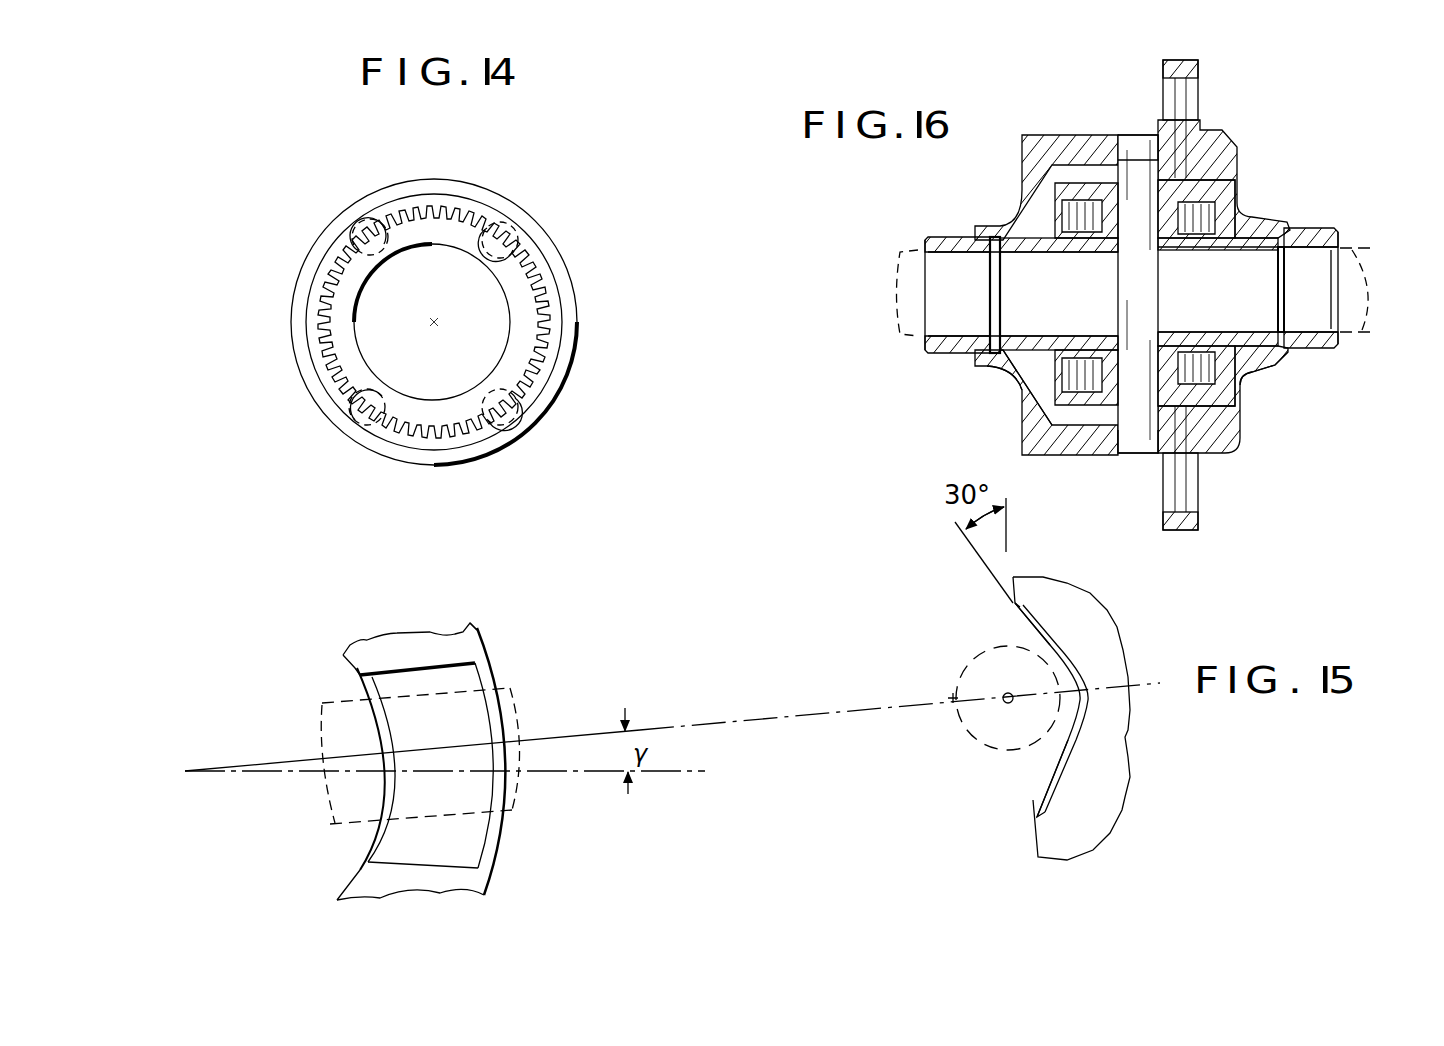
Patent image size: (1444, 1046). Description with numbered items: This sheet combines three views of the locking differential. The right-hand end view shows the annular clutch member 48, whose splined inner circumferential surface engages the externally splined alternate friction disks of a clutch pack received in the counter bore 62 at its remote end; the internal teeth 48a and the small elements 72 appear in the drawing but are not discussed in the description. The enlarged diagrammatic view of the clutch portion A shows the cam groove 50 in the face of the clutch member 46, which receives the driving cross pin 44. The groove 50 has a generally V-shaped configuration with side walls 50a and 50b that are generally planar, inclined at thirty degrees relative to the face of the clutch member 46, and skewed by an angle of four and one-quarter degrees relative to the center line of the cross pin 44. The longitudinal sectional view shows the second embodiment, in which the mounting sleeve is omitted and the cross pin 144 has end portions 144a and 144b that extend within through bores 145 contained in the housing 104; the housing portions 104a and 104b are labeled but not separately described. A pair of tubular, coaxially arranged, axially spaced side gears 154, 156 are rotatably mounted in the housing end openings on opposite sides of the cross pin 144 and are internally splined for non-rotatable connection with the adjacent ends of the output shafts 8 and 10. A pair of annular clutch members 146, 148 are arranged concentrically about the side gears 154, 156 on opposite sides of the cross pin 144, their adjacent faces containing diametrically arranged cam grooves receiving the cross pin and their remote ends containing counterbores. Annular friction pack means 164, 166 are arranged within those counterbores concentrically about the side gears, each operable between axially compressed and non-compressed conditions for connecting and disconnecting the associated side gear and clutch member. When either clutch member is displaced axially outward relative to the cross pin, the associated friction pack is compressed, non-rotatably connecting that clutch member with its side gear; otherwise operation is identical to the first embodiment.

In FIG. 14, the clutch member 48 is at (448, 182).
In FIG. 14, the internal gear teeth 48a is at (420, 410).
In FIG. 14, the counter bore 62 is at (352, 300).
In FIG. 14, the pinion gears 72 is at (347, 215).
In FIG. 16, the housing 104 is at (1018, 133).
In FIG. 16, the housing first portion 104a is at (1035, 193).
In FIG. 16, the housing second portion 104b is at (1240, 140).
In FIG. 16, the cross pin 144 is at (1112, 170).
In FIG. 16, the end portion 144a is at (1132, 150).
In FIG. 16, the end portion 144b is at (1127, 452).
In FIG. 16, the through bores 145 is at (1185, 140).
In FIG. 16, the clutch member 146 is at (1050, 185).
In FIG. 16, the clutch member 148 is at (1205, 192).
In FIG. 16, the output shaft 8 is at (900, 294).
In FIG. 16, the output shaft 10 is at (1380, 290).
In FIG. 16, the side gear 154 is at (1018, 372).
In FIG. 16, the friction pack means 164 is at (1055, 370).
In FIG. 16, the side gear 156 is at (1275, 363).
In FIG. 16, the friction pack means 166 is at (1240, 395).
In FIG. 15, the cross pin 44 is at (404, 648).
In FIG. 15, the clutch member 46 is at (372, 882).
In FIG. 15, the cam groove 50 is at (513, 727).
In FIG. 15, the side wall 50a is at (470, 682).
In FIG. 15, the side wall 50b is at (470, 842).
In FIG. 15, the clutch portion A is at (463, 643).